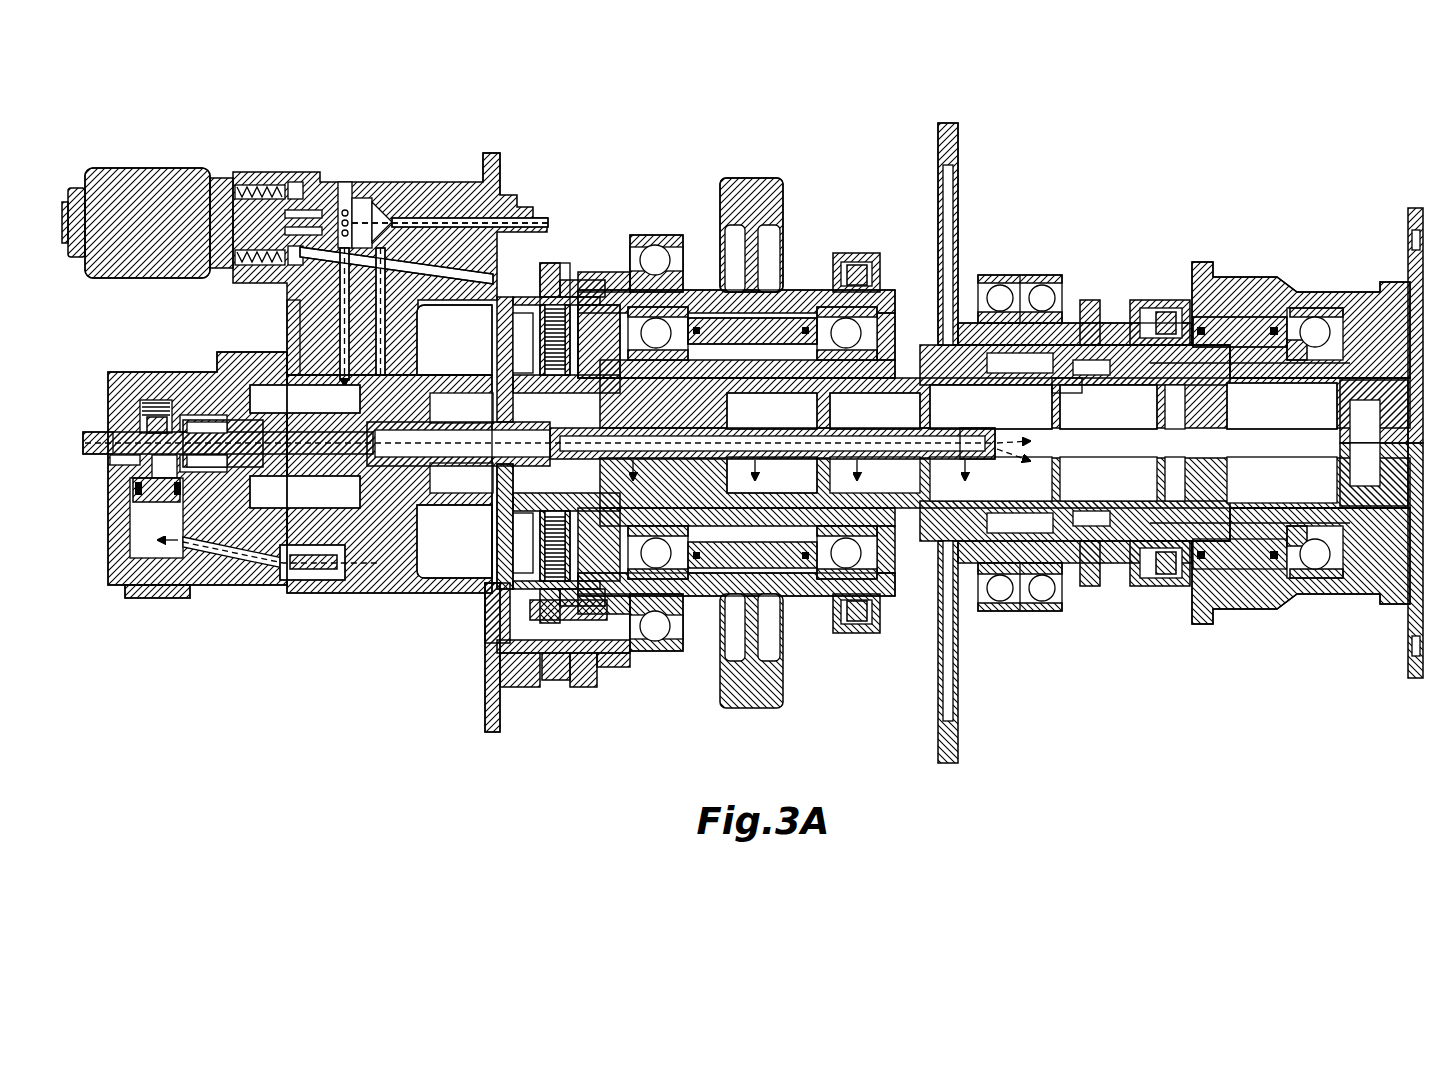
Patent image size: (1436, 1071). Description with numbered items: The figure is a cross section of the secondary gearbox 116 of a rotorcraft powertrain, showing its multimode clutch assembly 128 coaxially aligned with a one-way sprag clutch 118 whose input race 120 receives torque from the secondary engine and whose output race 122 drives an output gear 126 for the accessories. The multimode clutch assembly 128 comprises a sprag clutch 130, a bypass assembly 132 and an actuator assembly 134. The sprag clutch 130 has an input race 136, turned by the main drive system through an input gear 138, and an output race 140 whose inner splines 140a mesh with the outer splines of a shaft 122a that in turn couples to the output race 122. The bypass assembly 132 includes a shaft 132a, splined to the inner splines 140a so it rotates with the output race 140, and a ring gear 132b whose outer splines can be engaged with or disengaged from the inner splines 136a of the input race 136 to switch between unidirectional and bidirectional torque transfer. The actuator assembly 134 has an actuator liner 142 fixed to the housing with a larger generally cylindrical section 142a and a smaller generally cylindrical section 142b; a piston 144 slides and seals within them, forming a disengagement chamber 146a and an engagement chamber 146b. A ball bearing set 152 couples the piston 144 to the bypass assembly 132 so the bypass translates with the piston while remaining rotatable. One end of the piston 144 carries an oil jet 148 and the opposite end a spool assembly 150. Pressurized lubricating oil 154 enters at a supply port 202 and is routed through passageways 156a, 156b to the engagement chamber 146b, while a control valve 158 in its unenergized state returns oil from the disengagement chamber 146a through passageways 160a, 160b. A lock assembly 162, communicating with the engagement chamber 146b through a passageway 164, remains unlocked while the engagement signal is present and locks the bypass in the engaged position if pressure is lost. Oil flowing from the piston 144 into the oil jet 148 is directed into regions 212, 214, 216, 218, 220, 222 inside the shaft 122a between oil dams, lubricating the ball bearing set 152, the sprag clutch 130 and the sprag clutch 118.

The secondary gearbox 116 is at (1205, 177).
The sprag clutch 118 is at (1252, 617).
The input race 120 is at (1245, 290).
The output race 122 is at (1250, 367).
The shaft 122a is at (1078, 385).
The output gear 126 is at (960, 145).
The multimode clutch assembly 128 is at (812, 596).
The sprag clutch 130 is at (812, 290).
The bypass assembly 132 is at (497, 557).
The shaft 132a is at (612, 600).
The ring gear 132b is at (520, 643).
The actuator assembly 134 is at (188, 370).
The input race 136 is at (730, 307).
The inner splines 136a is at (562, 298).
The input gear 138 is at (752, 188).
The output race 140 is at (746, 393).
The inner splines 140a is at (678, 497).
The actuator liner 142 is at (427, 560).
The generally cylindrical section 142a is at (287, 322).
The generally cylindrical section 142b is at (457, 376).
The piston 144 is at (446, 593).
The disengagement chamber 146a is at (282, 385).
The engagement chamber 146b is at (393, 560).
The oil jet 148 is at (970, 470).
The spool assembly 150 is at (96, 456).
The ball bearing set 152 is at (613, 340).
The pressurized lubricating oil 154 is at (517, 200).
The passageway 156a is at (463, 222).
The passageway 156b is at (400, 270).
The control valve 158 is at (146, 178).
The passageway 160a is at (307, 266).
The passageway 160b is at (382, 300).
The lock assembly 162 is at (157, 598).
The passageway 164 is at (353, 590).
The supply port 202 is at (548, 222).
The region 212 is at (651, 258).
The region 214 is at (774, 481).
The region 216 is at (866, 420).
The region 218 is at (977, 420).
The region 220 is at (1097, 466).
The region 222 is at (1260, 466).